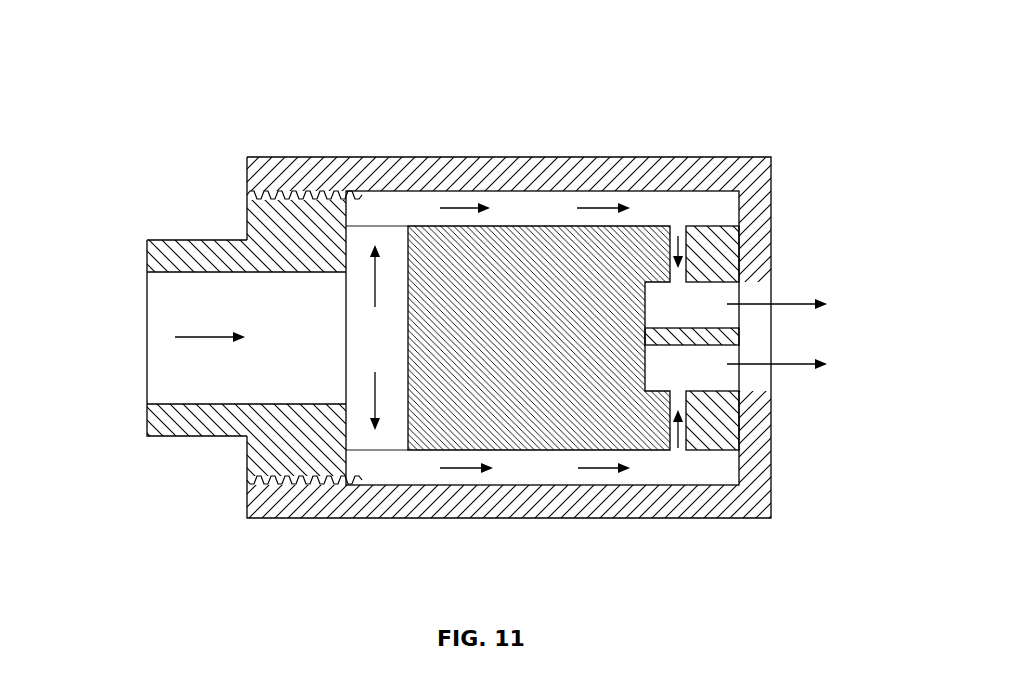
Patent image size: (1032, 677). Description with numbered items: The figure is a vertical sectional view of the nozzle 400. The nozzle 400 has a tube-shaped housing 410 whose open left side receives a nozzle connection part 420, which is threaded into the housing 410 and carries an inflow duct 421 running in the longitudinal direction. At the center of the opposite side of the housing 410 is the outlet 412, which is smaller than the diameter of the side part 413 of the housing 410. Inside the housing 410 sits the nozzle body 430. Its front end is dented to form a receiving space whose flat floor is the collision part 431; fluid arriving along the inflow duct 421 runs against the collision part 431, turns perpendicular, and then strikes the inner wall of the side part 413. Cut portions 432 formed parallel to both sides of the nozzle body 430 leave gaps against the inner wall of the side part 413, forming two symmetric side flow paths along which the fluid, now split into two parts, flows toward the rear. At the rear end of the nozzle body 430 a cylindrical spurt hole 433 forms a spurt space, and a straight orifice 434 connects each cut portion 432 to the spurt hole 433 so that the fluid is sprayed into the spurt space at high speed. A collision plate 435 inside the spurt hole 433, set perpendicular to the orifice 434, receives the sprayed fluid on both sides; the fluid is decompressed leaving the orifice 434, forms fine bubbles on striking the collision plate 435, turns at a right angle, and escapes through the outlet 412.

The nozzle 400 is at (643, 38).
The housing 410 is at (750, 154).
The outlet 412 is at (752, 375).
The side part 413 is at (441, 176).
The nozzle connection part 420 is at (243, 236).
The inflow duct 421 is at (183, 364).
The nozzle body 430 is at (513, 226).
The collision part 431 is at (408, 252).
The cut portions 432 is at (566, 238).
The spurt hole 433 is at (700, 303).
The orifice 434 is at (681, 234).
The collision plate 435 is at (740, 333).